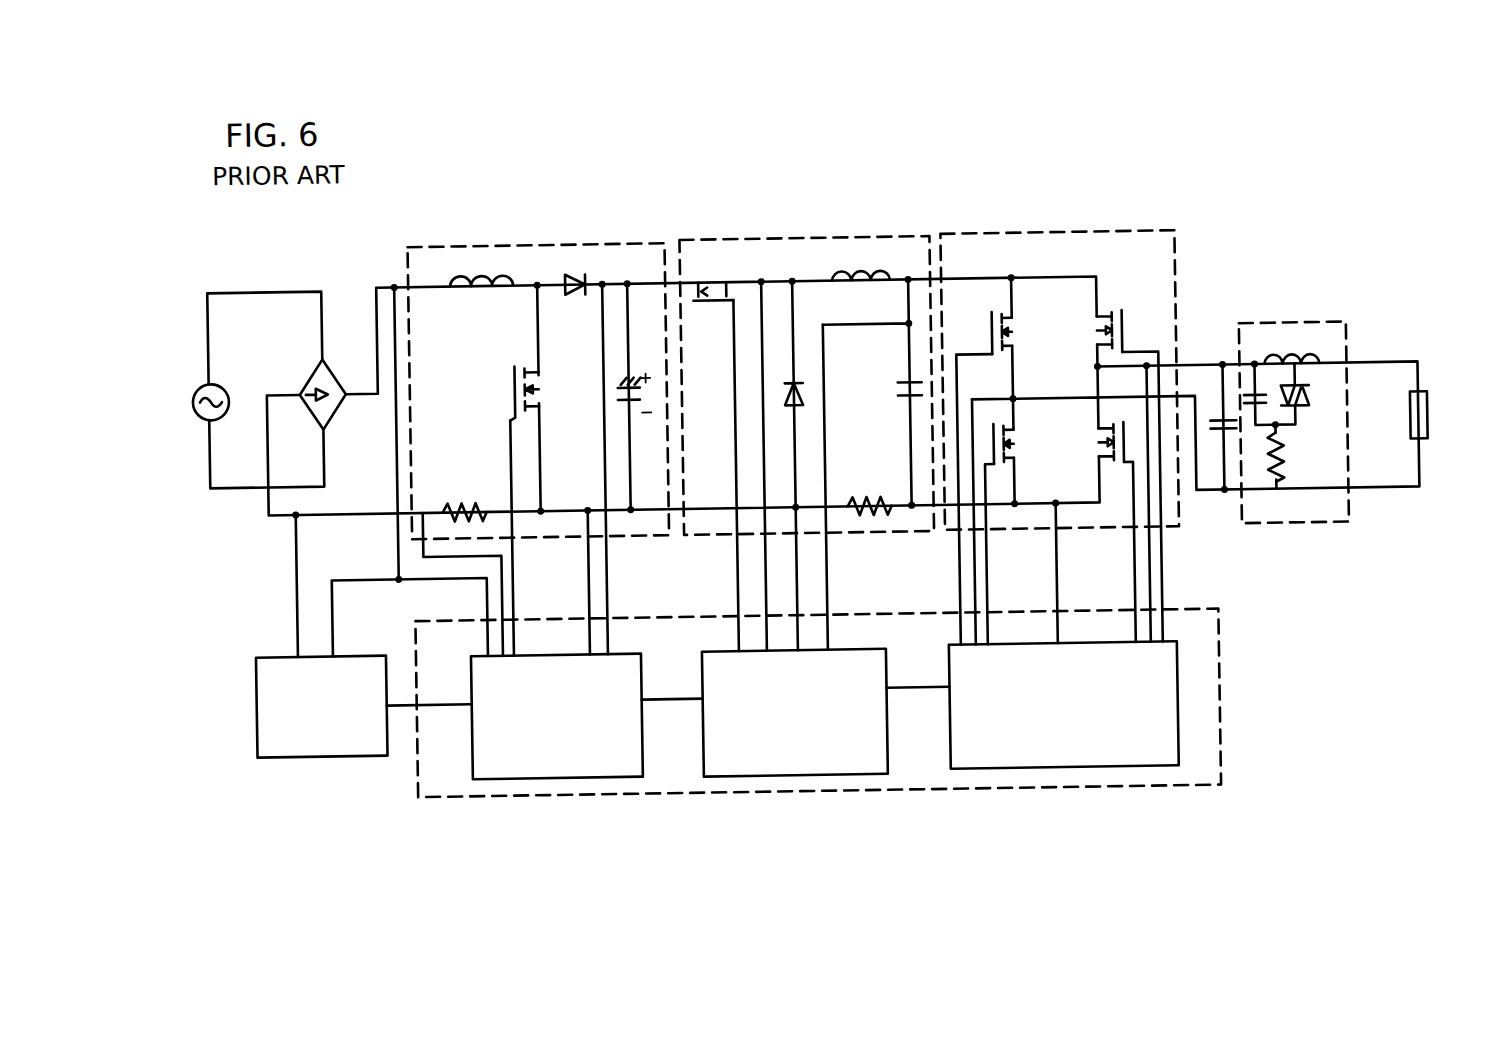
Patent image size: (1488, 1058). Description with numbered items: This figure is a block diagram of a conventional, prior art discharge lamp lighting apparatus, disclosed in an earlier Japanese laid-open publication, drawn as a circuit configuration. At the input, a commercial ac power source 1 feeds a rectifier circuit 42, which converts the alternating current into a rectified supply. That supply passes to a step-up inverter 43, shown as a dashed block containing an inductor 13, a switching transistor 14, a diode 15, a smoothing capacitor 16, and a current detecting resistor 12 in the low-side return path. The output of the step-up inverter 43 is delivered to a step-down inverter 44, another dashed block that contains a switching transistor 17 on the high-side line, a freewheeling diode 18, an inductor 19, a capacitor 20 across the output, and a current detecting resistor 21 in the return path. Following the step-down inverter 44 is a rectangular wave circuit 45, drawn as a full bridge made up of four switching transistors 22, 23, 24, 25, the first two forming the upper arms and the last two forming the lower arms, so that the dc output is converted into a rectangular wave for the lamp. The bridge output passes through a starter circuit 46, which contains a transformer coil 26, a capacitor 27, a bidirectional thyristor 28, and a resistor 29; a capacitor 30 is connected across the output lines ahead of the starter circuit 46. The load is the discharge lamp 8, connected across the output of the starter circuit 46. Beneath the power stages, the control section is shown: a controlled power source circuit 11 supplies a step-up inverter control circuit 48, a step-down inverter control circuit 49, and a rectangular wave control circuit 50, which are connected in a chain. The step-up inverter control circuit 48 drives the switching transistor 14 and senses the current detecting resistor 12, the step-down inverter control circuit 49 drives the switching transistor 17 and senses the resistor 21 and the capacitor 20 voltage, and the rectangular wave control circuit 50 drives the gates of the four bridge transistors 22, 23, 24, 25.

The commercial ac power source 1 is at (204, 379).
The rectifier circuit 42 is at (314, 366).
The step-up inverter 43 is at (509, 242).
The inductor 13 is at (471, 288).
The switching transistor 14 is at (540, 377).
The diode 15 is at (588, 275).
The smoothing capacitor 16 is at (647, 383).
The current detecting resistor 12 is at (447, 506).
The step-down inverter 44 is at (847, 239).
The switching transistor 17 is at (716, 280).
The diode 18 is at (804, 391).
The inductor 19 is at (841, 284).
The capacitor 20 is at (904, 394).
The current detecting resistor 21 is at (852, 504).
The rectangular wave circuit 45 is at (1104, 237).
The switching transistor 22 is at (1010, 325).
The switching transistor 23 is at (1115, 326).
The switching transistor 24 is at (1010, 449).
The switching transistor 25 is at (1111, 433).
The starter circuit 46 is at (1301, 331).
The transformer coil 26 is at (1310, 372).
The capacitor 27 is at (1252, 370).
The bidirectional thyristor 28 is at (1300, 396).
The resistor 29 is at (1286, 473).
The capacitor 30 is at (1220, 440).
The discharge lamp 8 is at (1430, 418).
The controlled power source circuit 11 is at (254, 698).
The step-up inverter control circuit 48 is at (539, 775).
The step-down inverter control circuit 49 is at (807, 776).
The rectangular wave control circuit 50 is at (1078, 772).